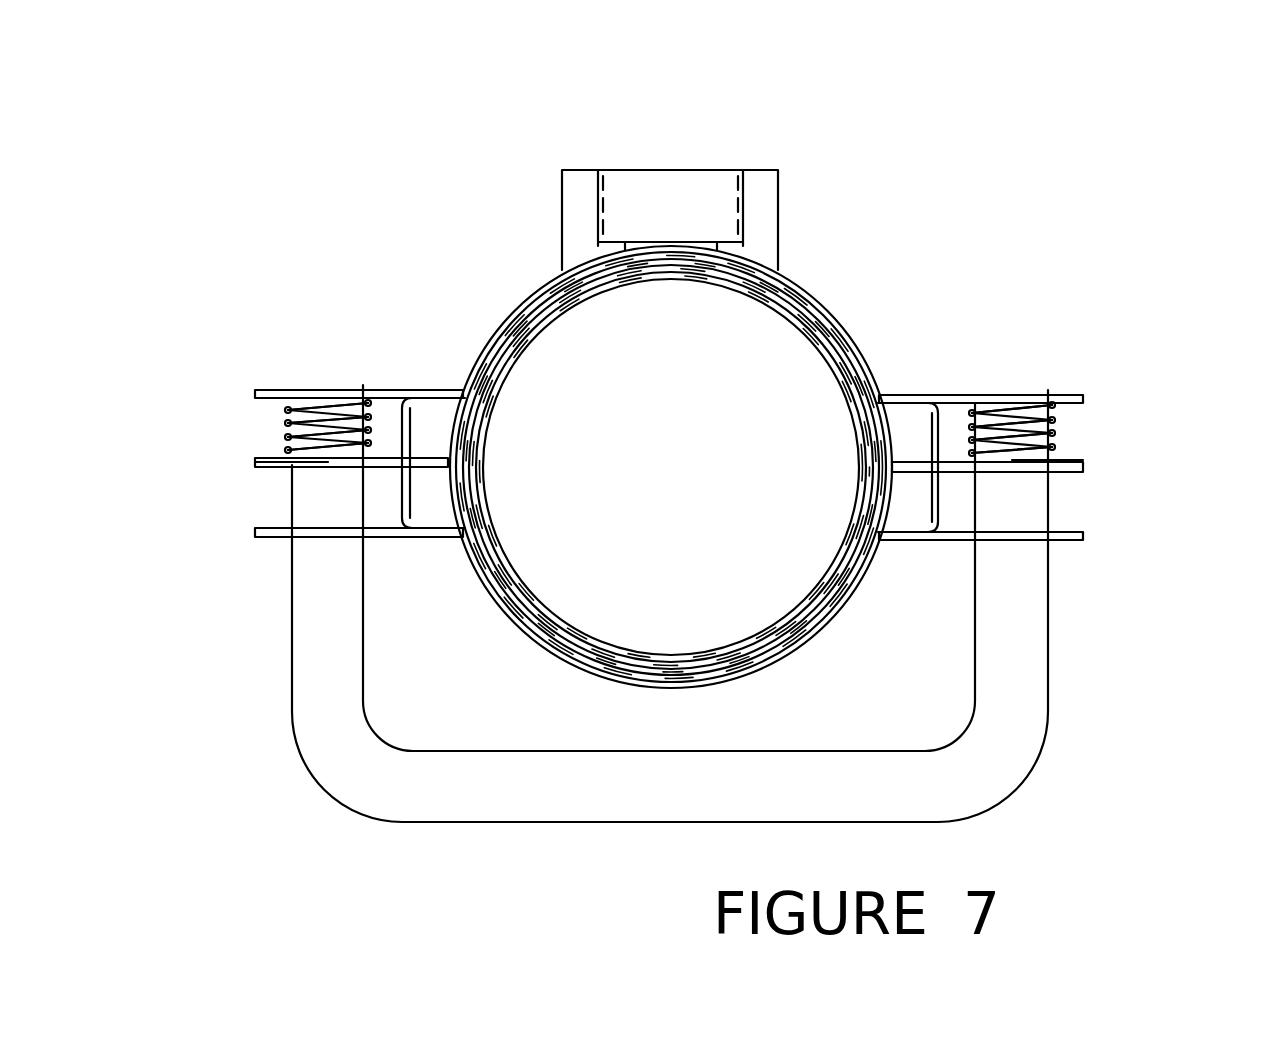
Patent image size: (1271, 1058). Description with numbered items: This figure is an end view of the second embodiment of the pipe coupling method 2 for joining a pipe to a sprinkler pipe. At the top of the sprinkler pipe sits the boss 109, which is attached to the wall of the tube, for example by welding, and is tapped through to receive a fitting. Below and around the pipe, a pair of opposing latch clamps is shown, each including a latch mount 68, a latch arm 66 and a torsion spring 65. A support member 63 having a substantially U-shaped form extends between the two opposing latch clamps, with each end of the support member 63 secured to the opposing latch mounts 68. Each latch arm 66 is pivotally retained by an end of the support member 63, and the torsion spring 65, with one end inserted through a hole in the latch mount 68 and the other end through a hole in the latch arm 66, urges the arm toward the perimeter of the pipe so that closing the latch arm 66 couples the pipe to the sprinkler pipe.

The pipe coupling method 2 is at (902, 243).
The support member 63 is at (572, 792).
The torsion spring 65 is at (287, 437).
The latch arm 66 is at (1085, 460).
The latch mount 68 is at (1063, 393).
The boss 109 is at (757, 168).